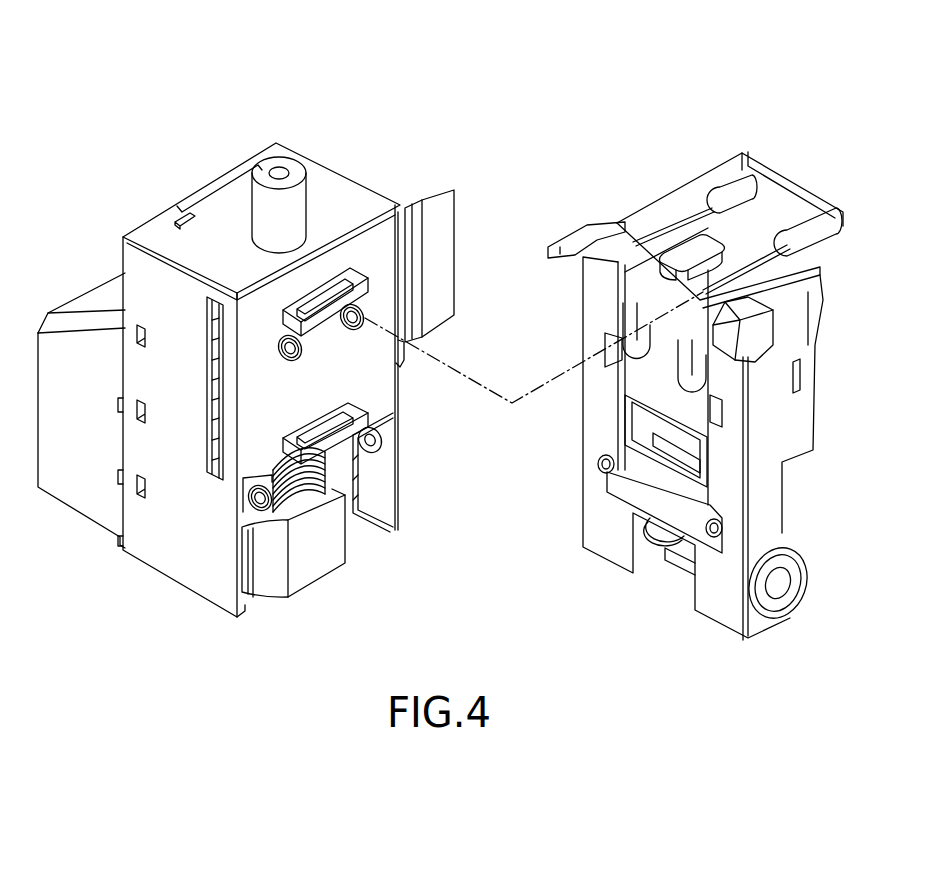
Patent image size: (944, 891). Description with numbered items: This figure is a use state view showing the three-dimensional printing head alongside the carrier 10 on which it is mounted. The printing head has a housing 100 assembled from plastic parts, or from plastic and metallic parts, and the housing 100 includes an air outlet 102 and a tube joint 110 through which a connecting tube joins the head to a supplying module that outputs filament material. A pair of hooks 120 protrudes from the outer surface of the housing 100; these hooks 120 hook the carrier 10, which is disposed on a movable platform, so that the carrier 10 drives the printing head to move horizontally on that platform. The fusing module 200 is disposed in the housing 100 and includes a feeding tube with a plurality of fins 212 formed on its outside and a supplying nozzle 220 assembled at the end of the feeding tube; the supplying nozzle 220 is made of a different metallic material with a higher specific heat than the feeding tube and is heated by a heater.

The carrier 10 is at (652, 190).
The housing 100 is at (252, 365).
The air outlet 102 is at (372, 485).
The tube joint 110 is at (292, 168).
The hooks 120 is at (364, 282).
The fusing module 200 is at (335, 559).
The fins 212 is at (344, 505).
The supplying nozzle 220 is at (330, 547).